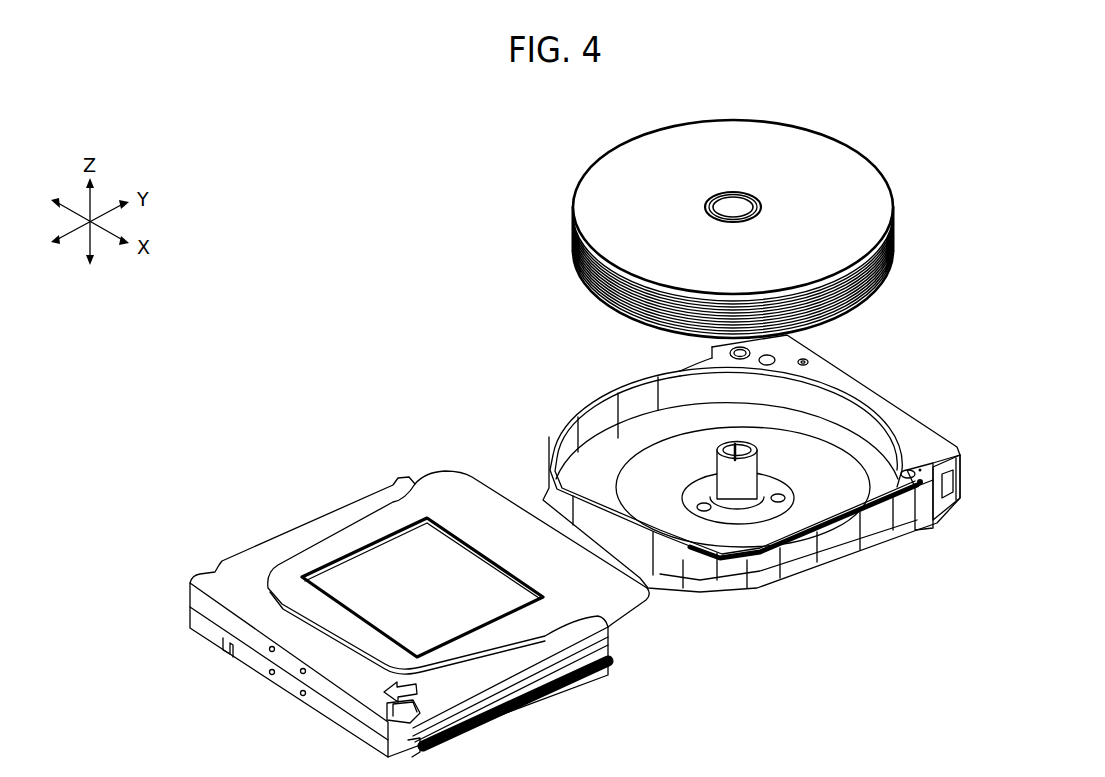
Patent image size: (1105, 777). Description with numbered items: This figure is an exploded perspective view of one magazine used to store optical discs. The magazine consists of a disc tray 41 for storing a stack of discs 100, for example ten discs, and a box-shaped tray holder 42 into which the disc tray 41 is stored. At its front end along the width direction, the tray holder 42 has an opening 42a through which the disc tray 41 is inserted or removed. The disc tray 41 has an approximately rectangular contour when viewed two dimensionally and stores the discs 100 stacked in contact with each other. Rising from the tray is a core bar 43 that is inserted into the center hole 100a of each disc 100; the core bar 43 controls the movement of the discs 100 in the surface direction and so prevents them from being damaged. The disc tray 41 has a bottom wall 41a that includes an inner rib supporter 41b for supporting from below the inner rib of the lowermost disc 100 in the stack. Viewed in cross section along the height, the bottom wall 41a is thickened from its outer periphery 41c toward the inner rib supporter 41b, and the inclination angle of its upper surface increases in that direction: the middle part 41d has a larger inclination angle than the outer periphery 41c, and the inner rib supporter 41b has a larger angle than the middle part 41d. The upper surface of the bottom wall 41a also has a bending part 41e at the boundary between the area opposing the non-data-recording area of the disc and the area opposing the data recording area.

The disc 100 is at (838, 168).
The center hole 100a is at (733, 203).
The disc tray 41 is at (820, 367).
The bottom wall 41a is at (608, 452).
The inner rib supporter 41b is at (833, 483).
The outer periphery 41c is at (960, 477).
The middle part 41d is at (873, 468).
The bending part 41e is at (755, 436).
The tray holder 42 is at (360, 527).
The opening 42a is at (626, 644).
The core bar 43 is at (727, 447).